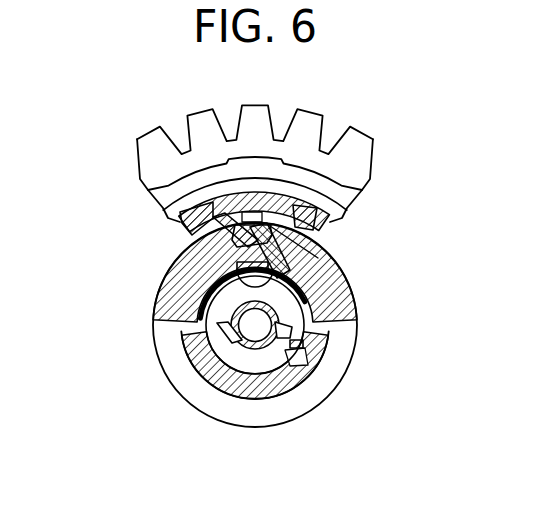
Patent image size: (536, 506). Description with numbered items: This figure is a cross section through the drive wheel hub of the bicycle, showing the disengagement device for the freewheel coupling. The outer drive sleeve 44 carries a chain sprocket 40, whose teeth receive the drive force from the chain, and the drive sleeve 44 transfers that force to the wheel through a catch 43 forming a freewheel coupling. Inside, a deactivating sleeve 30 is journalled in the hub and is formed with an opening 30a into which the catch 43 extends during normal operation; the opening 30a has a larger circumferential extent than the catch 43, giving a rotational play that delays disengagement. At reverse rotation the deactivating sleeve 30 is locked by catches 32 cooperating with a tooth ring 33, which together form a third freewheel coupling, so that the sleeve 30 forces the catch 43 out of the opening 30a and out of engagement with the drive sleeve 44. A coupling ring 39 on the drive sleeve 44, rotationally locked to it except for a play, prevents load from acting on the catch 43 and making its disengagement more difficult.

The chain sprocket 40 is at (360, 144).
The drive sleeve 44 is at (336, 186).
The coupling ring 39 is at (332, 226).
The catch 43 is at (300, 271).
The deactivating sleeve 30 is at (350, 313).
The opening 30a is at (196, 251).
The catch 32 is at (233, 397).
The tooth ring 33 is at (298, 356).